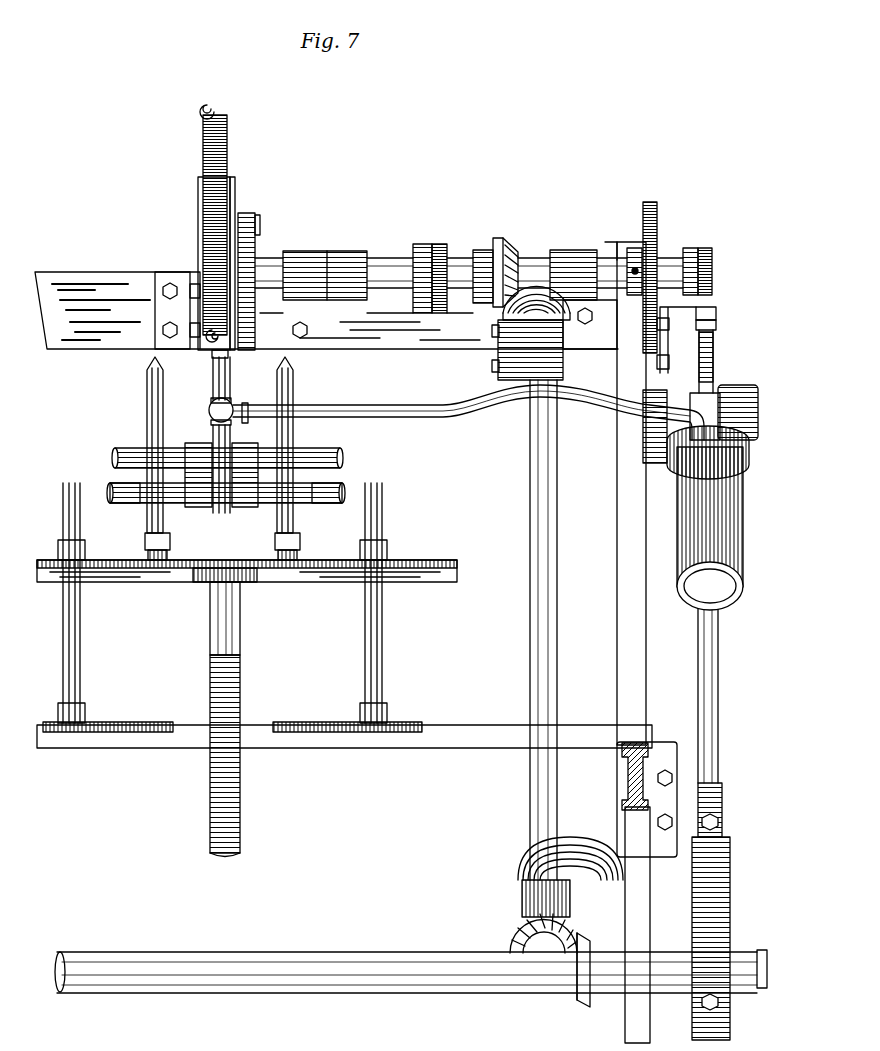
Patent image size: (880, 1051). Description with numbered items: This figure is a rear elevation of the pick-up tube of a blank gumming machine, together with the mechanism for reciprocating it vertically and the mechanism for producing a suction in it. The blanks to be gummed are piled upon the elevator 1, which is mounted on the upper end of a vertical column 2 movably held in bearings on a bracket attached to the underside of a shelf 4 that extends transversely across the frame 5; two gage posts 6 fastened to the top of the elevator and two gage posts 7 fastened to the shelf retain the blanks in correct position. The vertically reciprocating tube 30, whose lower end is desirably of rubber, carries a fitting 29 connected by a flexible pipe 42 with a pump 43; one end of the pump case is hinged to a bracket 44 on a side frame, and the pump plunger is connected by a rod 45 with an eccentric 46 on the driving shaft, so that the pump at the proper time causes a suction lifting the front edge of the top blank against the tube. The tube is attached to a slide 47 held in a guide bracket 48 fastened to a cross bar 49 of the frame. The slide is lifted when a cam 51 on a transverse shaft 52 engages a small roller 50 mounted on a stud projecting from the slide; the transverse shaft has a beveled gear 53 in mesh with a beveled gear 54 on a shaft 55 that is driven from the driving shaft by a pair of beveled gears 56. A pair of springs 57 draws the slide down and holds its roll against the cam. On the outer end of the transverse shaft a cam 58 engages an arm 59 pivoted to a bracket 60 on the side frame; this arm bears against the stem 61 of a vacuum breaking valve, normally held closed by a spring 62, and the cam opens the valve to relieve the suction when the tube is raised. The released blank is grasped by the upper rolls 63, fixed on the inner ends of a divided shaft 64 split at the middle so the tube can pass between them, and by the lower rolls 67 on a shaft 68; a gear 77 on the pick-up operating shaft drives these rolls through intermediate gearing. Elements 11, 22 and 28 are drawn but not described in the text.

The elevator 1 is at (420, 560).
The vertical column 2 is at (209, 633).
The shelf 4 is at (390, 748).
The frame 5 is at (628, 778).
The gage posts 6 is at (330, 385).
The gage posts 7 is at (344, 633).
The threaded portion 11 is at (241, 690).
The drive shaft 22 is at (410, 994).
The lower rod 28 is at (232, 440).
The fitting 29 is at (230, 400).
The vertically reciprocating tube 30 is at (212, 378).
The flexible pipe 42 is at (450, 418).
The pump 43 is at (677, 520).
The bracket 44 is at (735, 385).
The rod 45 is at (697, 676).
The eccentric 46 is at (731, 868).
The slide 47 is at (228, 360).
The guide bracket 48 is at (236, 187).
The cross bar 49 is at (340, 493).
The small roller 50 is at (261, 222).
The cam 51 is at (257, 246).
The transverse shaft 52 is at (392, 268).
The beveled gear 53 is at (512, 240).
The beveled gear 54 is at (540, 290).
The shaft 55 is at (530, 610).
The beveled gears 56 is at (585, 935).
The springs 57 is at (228, 143).
The cam 58 is at (713, 272).
The arm 59 is at (716, 312).
The bracket 60 is at (682, 330).
The stem 61 is at (716, 325).
The spring 62 is at (714, 343).
The upper rolls 63 is at (292, 430).
The divided shaft 64 is at (344, 460).
The lower rolls 67 is at (246, 524).
The shaft 68 is at (328, 518).
The gear 77 is at (658, 210).